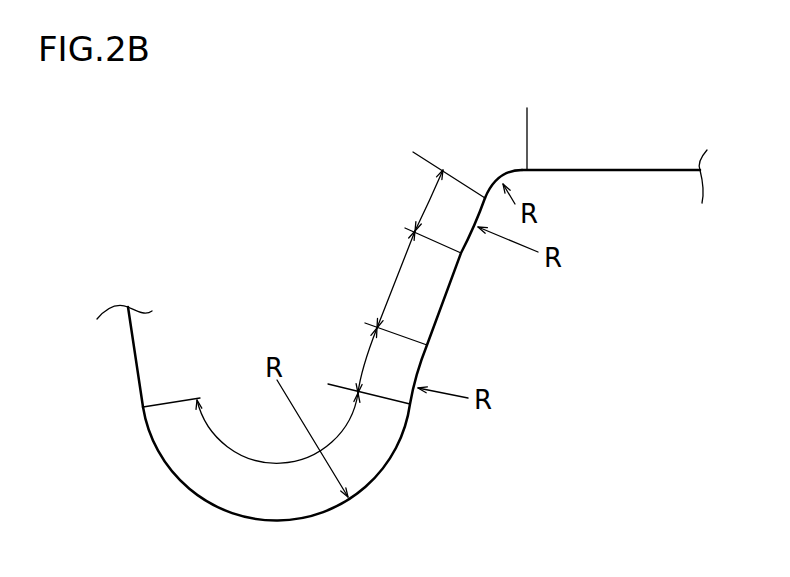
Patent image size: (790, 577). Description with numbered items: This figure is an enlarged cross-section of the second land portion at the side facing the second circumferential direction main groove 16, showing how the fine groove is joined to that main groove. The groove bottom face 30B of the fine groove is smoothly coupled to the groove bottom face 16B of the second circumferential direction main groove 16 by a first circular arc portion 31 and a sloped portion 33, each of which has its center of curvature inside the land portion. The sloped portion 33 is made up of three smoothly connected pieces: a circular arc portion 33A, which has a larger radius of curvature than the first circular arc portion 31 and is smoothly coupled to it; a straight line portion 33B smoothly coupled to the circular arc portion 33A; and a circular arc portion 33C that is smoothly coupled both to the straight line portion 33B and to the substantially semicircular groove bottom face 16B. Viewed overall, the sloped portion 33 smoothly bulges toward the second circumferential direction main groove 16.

The second circumferential direction main groove 16 is at (137, 357).
The groove bottom face 16B is at (235, 453).
The groove bottom face 30B is at (628, 170).
The first circular arc portion 31 is at (525, 116).
The sloped portion 33 is at (367, 106).
The circular arc portion 33A is at (425, 202).
The straight line portion 33B is at (393, 277).
The circular arc portion 33C is at (365, 358).